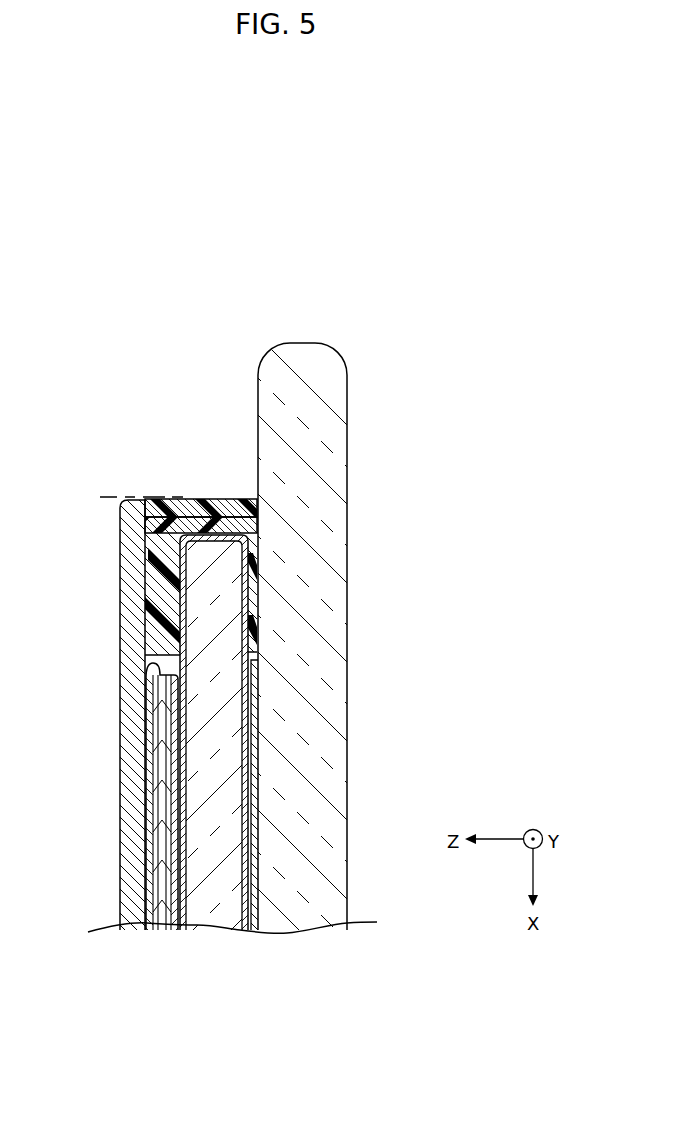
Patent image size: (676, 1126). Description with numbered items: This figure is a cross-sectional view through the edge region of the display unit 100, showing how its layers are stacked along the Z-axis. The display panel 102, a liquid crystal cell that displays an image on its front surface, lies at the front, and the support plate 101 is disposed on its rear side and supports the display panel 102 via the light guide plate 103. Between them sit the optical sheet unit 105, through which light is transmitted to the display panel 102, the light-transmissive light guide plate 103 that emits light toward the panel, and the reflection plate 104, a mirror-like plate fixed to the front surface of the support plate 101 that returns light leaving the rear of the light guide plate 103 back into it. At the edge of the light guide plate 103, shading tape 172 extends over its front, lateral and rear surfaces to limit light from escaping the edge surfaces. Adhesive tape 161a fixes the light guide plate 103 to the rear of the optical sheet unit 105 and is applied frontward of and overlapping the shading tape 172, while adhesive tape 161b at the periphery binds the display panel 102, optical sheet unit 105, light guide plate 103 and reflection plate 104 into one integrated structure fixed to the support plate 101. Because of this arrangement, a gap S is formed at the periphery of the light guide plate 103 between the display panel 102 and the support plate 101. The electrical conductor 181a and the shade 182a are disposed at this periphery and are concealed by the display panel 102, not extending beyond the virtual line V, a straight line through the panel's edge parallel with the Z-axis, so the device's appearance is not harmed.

The display unit 100 is at (186, 428).
The support plate 101 is at (318, 634).
The display panel 102 is at (132, 766).
The light guide plate 103 is at (226, 775).
The reflection plate 104 is at (256, 730).
The optical sheet unit 105 is at (160, 665).
The adhesive tape 161a is at (162, 590).
The adhesive tape 161b is at (153, 571).
The shading tape 172 is at (188, 599).
The electrical conductor 181a is at (250, 522).
The shade 182a is at (246, 505).
The gap S is at (148, 513).
The virtual line V is at (103, 493).